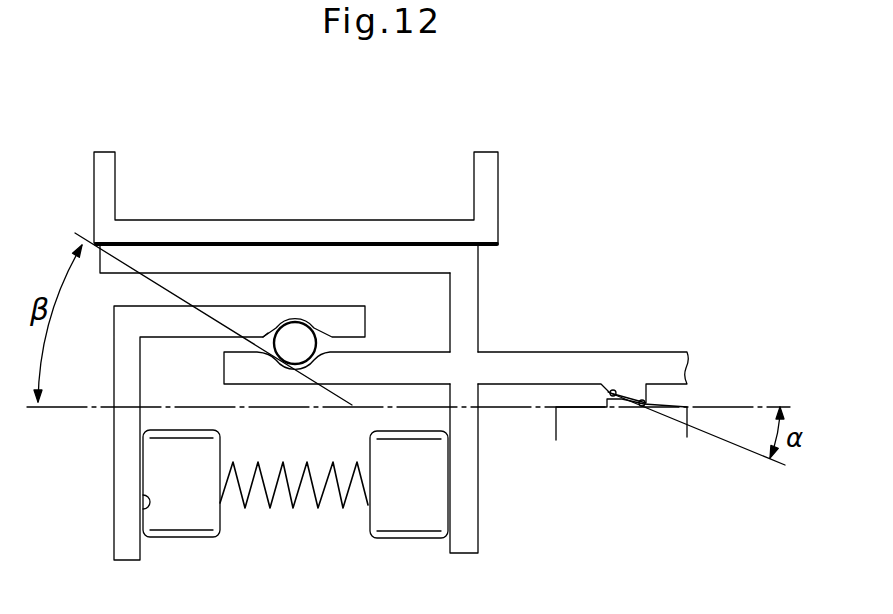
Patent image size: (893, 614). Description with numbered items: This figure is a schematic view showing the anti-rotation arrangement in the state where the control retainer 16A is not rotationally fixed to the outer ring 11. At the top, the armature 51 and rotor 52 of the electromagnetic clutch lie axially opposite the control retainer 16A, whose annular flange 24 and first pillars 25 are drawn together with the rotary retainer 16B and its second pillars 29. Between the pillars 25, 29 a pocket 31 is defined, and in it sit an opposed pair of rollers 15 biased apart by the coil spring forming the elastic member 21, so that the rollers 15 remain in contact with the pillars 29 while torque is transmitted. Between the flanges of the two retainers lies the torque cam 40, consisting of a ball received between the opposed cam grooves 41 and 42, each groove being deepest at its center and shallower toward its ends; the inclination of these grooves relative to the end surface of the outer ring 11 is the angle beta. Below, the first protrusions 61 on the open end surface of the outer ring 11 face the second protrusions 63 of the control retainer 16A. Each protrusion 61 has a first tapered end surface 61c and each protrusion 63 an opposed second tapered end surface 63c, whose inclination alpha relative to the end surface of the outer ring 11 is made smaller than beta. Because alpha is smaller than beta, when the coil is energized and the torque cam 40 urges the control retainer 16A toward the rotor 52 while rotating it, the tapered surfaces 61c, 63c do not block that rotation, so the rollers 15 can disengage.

The outer ring 11 is at (628, 462).
The rollers 15 is at (188, 523).
The control retainer 16A is at (513, 348).
The rotary retainer 16B is at (232, 423).
The elastic member 21 is at (303, 502).
The annular flange 24 is at (456, 326).
The first pillars 25 is at (473, 472).
The second pillars 29 is at (232, 423).
The pockets 31 is at (152, 507).
The torque cam 40 is at (312, 318).
The cam groove 41 is at (330, 338).
The cam groove 42 is at (263, 335).
The armature 51 is at (277, 255).
The rotor 52 is at (328, 230).
The first protrusions 61 is at (621, 462).
The first tapered end surface 61c is at (642, 408).
The second protrusions 63 is at (653, 322).
The second tapered end surface 63c is at (617, 392).